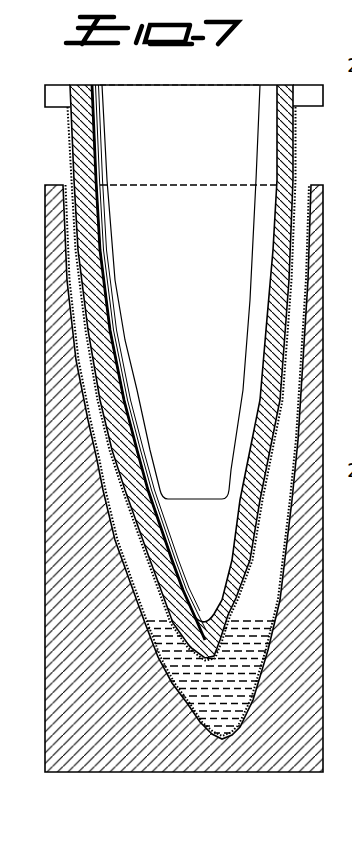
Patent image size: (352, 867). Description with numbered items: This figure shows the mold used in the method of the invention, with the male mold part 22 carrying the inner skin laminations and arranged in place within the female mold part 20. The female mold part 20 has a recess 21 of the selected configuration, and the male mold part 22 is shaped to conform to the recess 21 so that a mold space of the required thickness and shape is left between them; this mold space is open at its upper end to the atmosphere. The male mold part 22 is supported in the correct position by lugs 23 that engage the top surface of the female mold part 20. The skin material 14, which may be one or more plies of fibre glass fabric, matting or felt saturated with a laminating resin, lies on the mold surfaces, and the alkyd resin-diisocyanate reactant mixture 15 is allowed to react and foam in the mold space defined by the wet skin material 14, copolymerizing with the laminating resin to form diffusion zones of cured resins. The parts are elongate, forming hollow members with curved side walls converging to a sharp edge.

The skin material 14 is at (300, 197).
The alkyd resin-diisocyanate reactant mixture 15 is at (235, 685).
The female mold part 20 is at (60, 482).
The recess 21 is at (74, 350).
The male mold part 22 is at (78, 151).
The lugs 23 is at (56, 96).